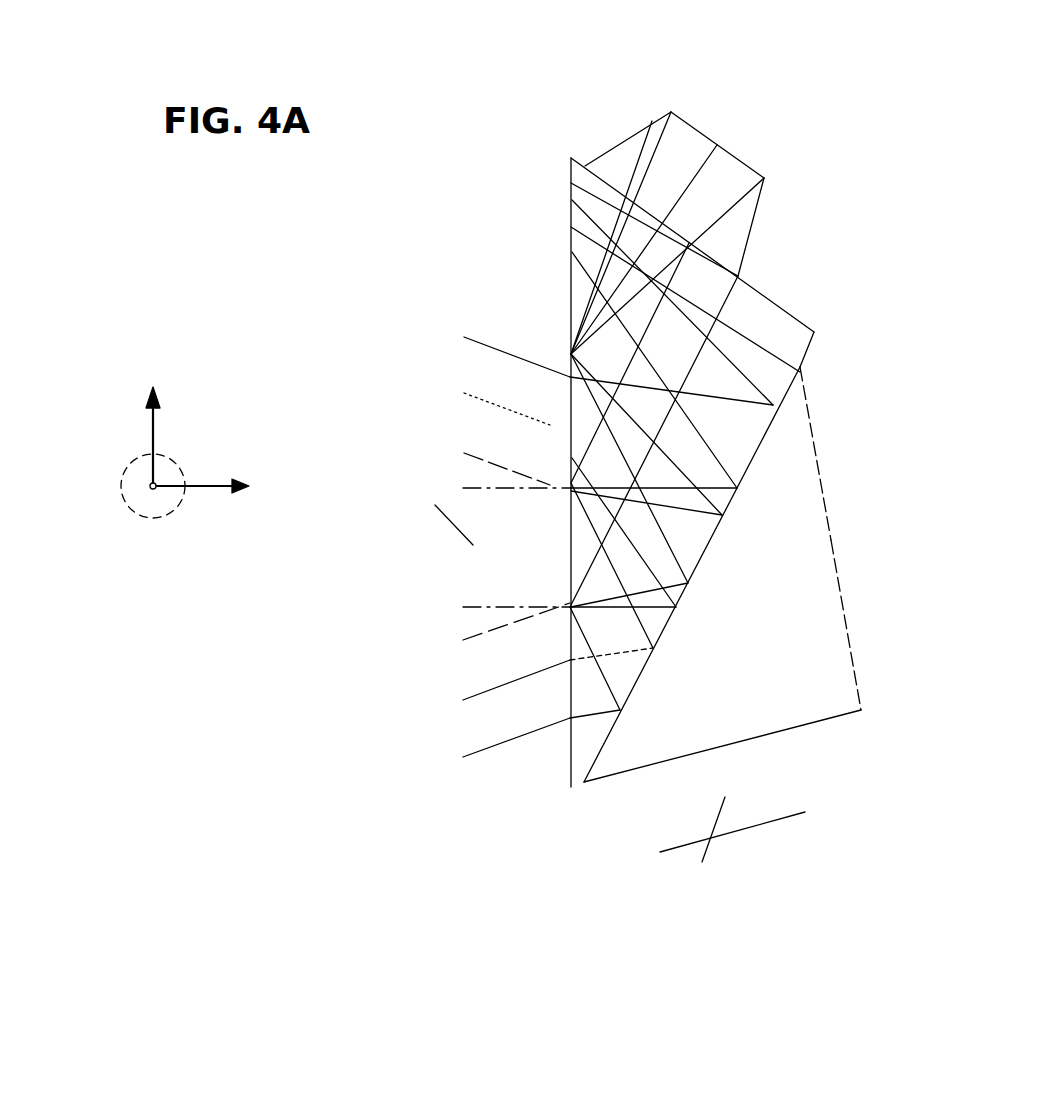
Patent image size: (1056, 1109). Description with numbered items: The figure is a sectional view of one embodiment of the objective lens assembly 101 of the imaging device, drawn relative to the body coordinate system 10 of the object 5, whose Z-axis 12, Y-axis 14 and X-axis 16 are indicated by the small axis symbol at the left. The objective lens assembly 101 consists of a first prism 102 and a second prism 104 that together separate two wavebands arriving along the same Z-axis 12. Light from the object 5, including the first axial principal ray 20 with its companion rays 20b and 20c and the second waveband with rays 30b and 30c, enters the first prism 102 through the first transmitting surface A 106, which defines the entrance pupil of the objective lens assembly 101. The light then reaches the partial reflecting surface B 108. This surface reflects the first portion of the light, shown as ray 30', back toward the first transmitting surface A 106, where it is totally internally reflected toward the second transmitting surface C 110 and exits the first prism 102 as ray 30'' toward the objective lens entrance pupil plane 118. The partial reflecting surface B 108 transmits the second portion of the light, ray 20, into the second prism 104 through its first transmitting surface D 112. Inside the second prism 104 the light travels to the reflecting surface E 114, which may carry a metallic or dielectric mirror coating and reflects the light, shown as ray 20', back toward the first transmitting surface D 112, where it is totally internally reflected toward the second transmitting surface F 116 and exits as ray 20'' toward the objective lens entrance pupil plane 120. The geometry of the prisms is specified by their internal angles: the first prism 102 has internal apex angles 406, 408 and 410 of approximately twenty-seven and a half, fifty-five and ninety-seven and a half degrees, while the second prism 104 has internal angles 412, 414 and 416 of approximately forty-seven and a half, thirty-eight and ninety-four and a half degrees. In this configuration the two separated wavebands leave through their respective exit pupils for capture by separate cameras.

The object 5 is at (173, 510).
The body coordinate system 10 is at (131, 548).
The Z-axis 12 is at (208, 486).
The Y-axis 14 is at (128, 476).
The X-axis 16 is at (155, 427).
The first axial principal ray 20 is at (857, 513).
The ray 20' is at (854, 605).
The ray 20'' is at (710, 845).
The VNIR ray 20b is at (480, 622).
The VNIR ray 20c is at (477, 323).
The ray 30' is at (517, 398).
The ray 30'' is at (645, 206).
The LWIR ray 30b is at (466, 468).
The LWIR ray 30c is at (481, 342).
The objective lens assembly 101 is at (954, 139).
The first prism 102 is at (565, 205).
The second prism 104 is at (827, 450).
The first transmitting surface A 106 is at (569, 288).
The partial reflecting surface B 108 is at (600, 745).
The second transmitting surface C 110 is at (790, 311).
The first transmitting surface D 112 is at (808, 369).
The reflecting surface E 114 is at (831, 533).
The second transmitting surface F 116 is at (830, 722).
The objective lens entrance pupil plane 118 is at (755, 170).
The objective lens entrance pupil plane 120 is at (785, 822).
The internal apex angle 406 is at (571, 802).
The internal apex angle 408 is at (560, 150).
The internal apex angle 410 is at (832, 333).
The internal angle 412 is at (588, 795).
The internal angle 414 is at (815, 364).
The internal angle 416 is at (874, 709).